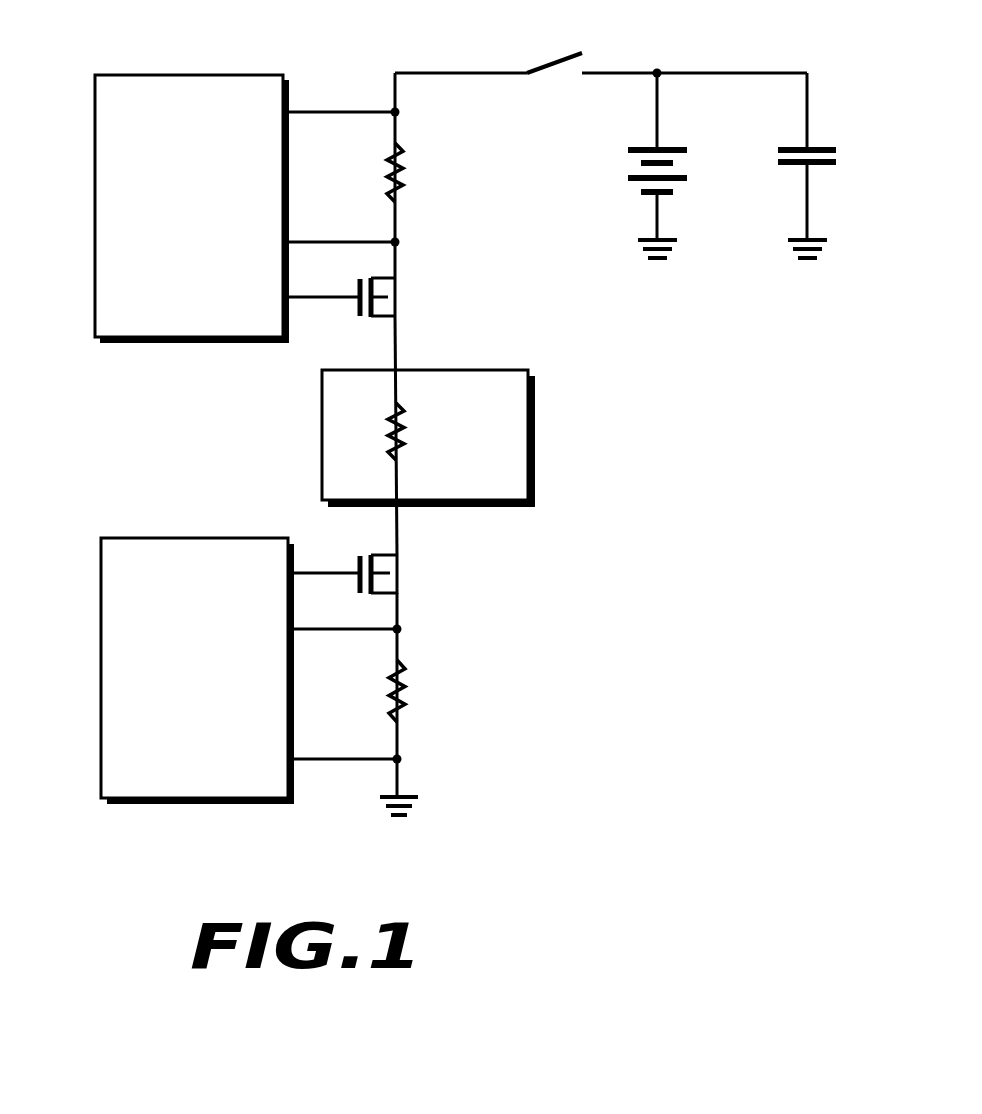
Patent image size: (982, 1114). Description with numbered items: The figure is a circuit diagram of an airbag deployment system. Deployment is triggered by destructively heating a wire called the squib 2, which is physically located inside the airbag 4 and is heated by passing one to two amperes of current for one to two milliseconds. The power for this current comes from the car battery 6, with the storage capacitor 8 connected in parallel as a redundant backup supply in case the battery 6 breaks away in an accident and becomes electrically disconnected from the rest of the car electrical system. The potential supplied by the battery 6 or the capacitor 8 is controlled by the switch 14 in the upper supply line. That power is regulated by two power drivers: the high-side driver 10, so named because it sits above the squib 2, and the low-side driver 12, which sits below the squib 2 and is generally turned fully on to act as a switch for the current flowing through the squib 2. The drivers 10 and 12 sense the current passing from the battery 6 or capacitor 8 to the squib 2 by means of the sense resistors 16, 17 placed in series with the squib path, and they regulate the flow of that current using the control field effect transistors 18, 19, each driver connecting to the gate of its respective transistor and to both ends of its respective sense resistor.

The squib 2 is at (390, 411).
The airbag 4 is at (535, 456).
The car battery 6 is at (678, 147).
The storage capacitor 8 is at (826, 146).
The high-side driver 10 is at (210, 298).
The low-side driver 12 is at (214, 760).
The switch 14 is at (553, 58).
The sense resistor 16 is at (401, 160).
The sense resistor 17 is at (404, 681).
The control FET 18 is at (385, 290).
The control FET 19 is at (385, 566).